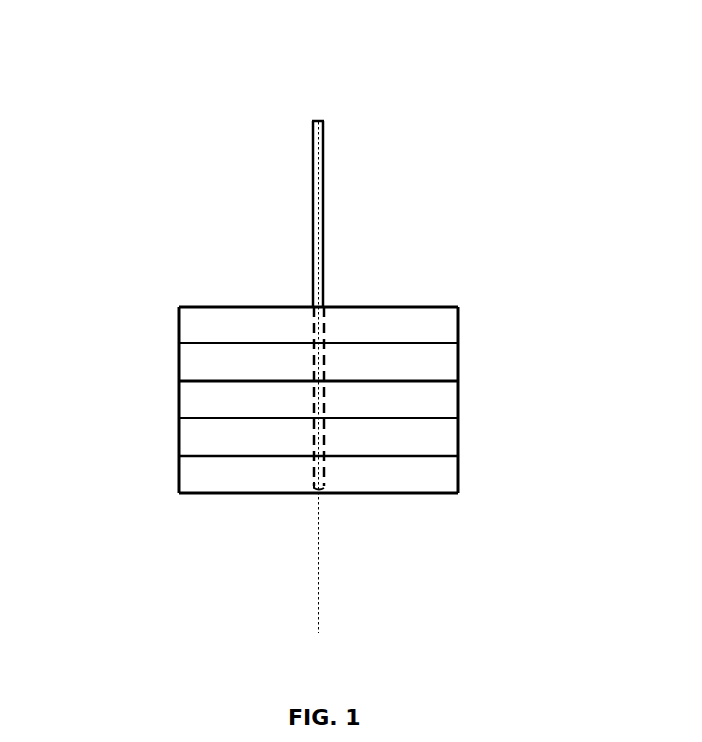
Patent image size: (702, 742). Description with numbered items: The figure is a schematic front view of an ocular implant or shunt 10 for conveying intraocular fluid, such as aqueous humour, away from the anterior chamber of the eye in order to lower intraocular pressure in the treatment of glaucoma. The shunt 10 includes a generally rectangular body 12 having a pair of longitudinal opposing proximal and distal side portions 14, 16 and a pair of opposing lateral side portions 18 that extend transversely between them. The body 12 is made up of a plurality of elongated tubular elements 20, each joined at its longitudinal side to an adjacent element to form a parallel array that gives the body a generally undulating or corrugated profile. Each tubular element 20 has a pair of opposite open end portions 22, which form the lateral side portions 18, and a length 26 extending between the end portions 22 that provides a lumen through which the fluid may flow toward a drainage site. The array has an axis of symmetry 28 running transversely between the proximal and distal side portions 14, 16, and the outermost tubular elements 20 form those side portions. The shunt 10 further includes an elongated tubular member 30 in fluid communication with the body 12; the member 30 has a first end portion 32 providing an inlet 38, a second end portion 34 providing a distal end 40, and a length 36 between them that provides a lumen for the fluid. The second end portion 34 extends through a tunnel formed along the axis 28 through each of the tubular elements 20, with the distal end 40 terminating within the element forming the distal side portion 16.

The ocular implant or shunt 10 is at (310, 346).
The body 12 is at (107, 357).
The proximal side portion 14 is at (356, 237).
The distal side portion 16 is at (362, 472).
The lateral side portions 18 is at (321, 355).
The tubular elements 20 is at (285, 401).
The open end portions 22 is at (321, 433).
The length 26 is at (389, 558).
The axis of symmetry 28 is at (274, 497).
The elongated tubular member 30 is at (374, 197).
The first end portion 32 is at (376, 176).
The second end portion 34 is at (371, 359).
The length 36 is at (374, 214).
The inlet 38 is at (315, 110).
The distal end 40 is at (280, 538).